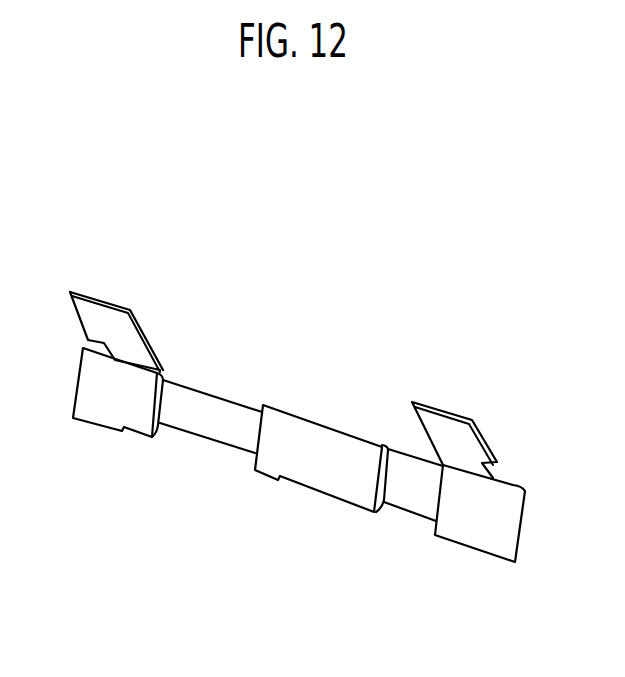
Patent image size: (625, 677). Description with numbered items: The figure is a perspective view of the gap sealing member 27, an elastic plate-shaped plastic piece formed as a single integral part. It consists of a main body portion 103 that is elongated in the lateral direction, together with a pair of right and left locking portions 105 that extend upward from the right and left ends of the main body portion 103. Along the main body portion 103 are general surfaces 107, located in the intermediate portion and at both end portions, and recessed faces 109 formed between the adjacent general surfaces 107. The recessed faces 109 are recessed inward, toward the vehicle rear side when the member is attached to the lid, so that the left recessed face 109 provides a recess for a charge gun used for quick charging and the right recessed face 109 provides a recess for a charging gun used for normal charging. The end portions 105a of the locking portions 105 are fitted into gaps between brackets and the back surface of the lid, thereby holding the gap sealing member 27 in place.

The gap sealing member 27 is at (300, 398).
The main body portion 103 is at (330, 455).
The locking portion 105 is at (118, 306).
The end portion 105a is at (77, 292).
The general surface 107 is at (296, 482).
The recessed face 109 is at (207, 427).